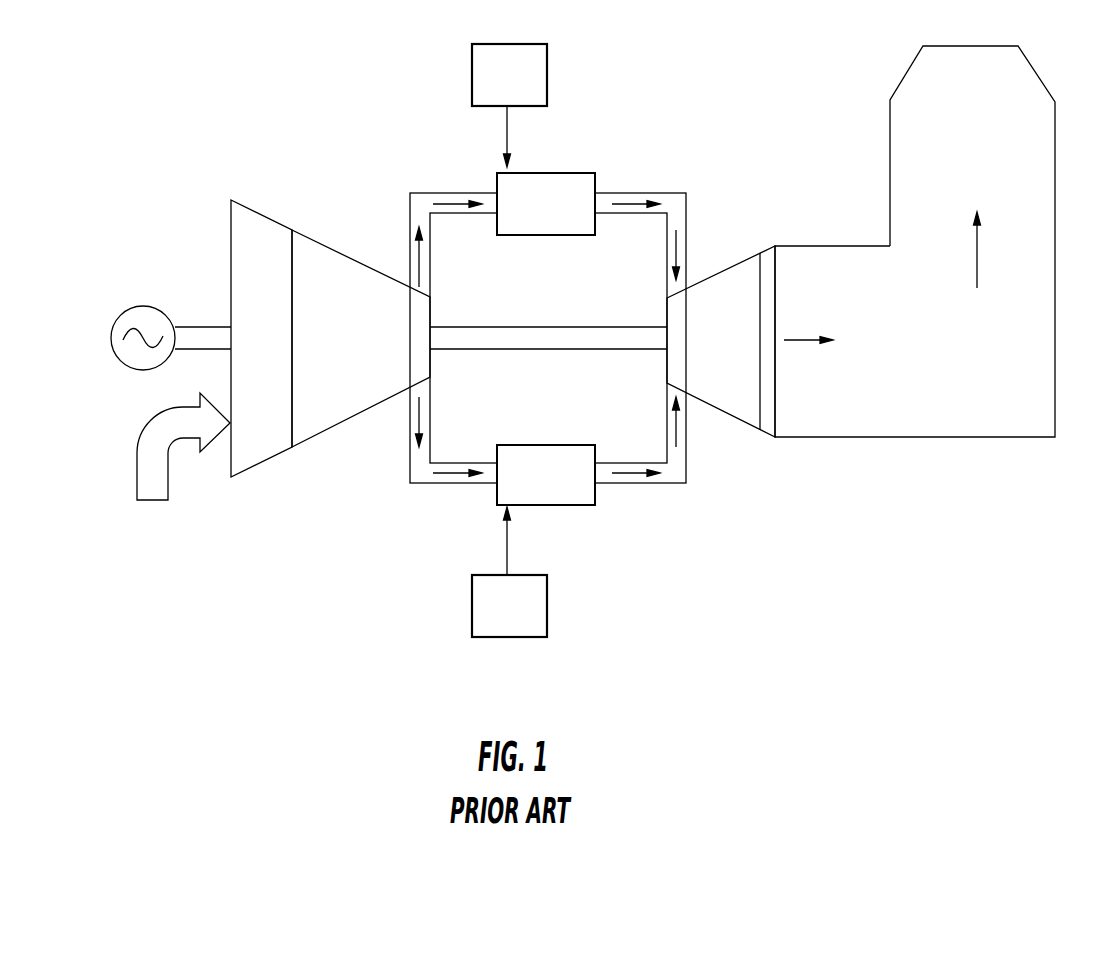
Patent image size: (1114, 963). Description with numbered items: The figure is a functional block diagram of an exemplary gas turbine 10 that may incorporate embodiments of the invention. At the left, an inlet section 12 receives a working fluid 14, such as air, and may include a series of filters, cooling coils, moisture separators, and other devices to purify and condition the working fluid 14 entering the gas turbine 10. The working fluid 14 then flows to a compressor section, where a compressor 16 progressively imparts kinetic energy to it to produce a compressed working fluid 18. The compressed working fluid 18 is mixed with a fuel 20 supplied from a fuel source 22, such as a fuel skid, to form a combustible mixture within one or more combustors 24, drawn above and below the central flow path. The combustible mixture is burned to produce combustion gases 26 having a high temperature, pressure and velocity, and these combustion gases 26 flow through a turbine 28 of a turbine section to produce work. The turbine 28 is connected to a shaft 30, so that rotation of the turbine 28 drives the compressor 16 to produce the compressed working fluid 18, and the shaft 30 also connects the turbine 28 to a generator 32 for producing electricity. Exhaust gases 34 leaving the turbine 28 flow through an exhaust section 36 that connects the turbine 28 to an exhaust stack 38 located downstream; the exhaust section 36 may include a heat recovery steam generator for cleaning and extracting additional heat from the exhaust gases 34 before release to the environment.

The gas turbine 10 is at (837, 653).
The inlet section 12 is at (250, 353).
The working fluid 14 is at (152, 502).
The compressor 16 is at (344, 353).
The compressed working fluid 18 is at (413, 265).
The fuel 20 is at (510, 147).
The fuel source 22 is at (497, 91).
The combustor 24 is at (534, 220).
The combustion gases 26 is at (680, 252).
The turbine 28 is at (701, 353).
The shaft 30 is at (540, 350).
The generator 32 is at (142, 305).
The exhaust gases 34 is at (978, 267).
The exhaust section 36 is at (960, 353).
The exhaust stack 38 is at (1057, 148).